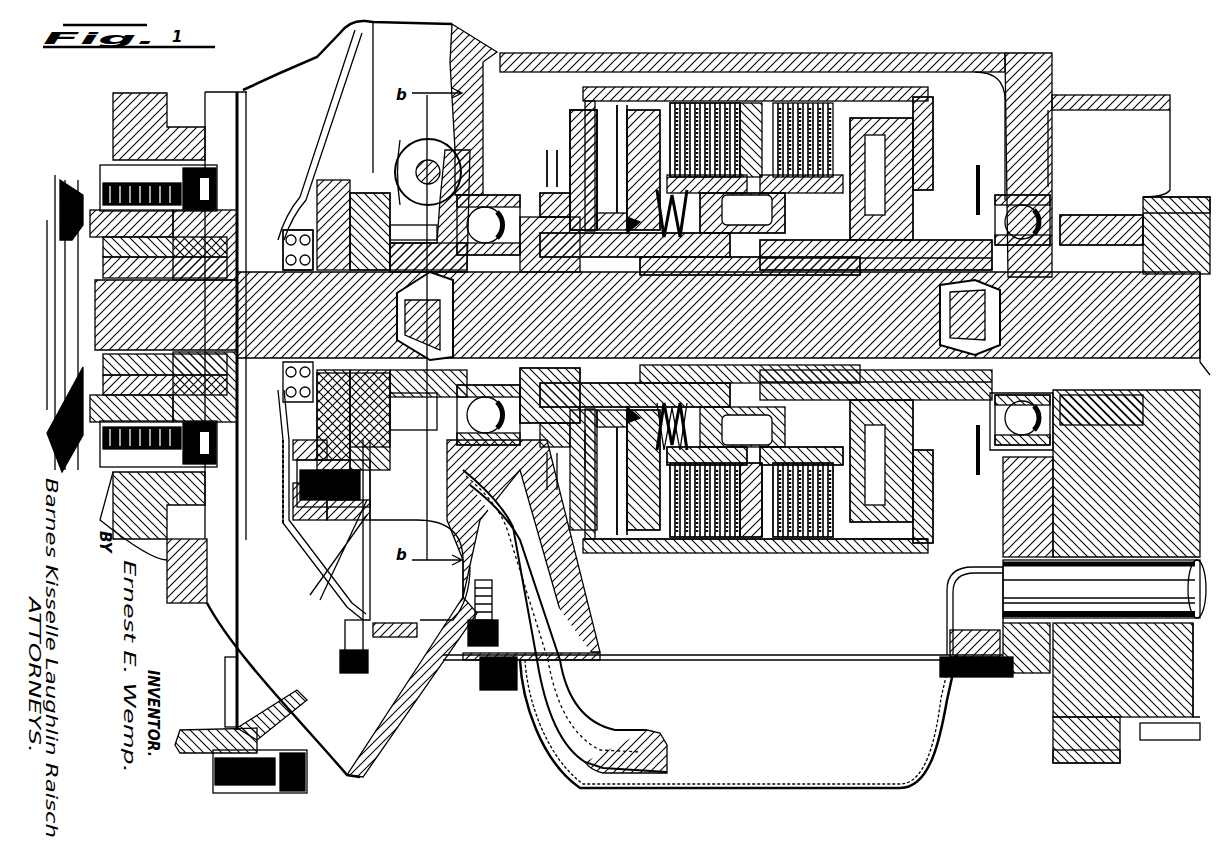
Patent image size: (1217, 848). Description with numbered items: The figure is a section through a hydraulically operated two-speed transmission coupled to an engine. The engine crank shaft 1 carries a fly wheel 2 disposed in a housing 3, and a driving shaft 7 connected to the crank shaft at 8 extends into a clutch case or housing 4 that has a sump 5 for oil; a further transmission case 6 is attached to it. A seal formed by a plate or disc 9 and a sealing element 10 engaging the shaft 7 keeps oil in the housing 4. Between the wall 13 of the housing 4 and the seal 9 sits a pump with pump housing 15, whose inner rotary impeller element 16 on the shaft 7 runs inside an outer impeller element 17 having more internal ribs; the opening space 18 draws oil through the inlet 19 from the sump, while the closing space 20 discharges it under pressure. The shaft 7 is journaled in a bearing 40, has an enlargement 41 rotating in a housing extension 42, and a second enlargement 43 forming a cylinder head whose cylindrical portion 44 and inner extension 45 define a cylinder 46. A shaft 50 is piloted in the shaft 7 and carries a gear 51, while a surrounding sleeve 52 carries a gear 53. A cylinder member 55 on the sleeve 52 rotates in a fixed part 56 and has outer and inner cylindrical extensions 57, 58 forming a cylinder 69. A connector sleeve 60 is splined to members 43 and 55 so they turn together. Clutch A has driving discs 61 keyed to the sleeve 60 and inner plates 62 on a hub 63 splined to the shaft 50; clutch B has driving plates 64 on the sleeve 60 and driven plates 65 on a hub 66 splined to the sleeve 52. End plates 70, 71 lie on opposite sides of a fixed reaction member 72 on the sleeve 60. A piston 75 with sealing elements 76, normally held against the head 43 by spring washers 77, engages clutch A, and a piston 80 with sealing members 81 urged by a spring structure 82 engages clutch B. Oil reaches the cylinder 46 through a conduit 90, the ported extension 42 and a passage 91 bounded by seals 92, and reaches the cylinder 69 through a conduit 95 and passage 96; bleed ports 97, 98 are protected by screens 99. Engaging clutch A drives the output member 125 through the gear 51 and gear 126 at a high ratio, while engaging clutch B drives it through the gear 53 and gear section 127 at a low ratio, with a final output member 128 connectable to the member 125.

The crank shaft 1 is at (62, 208).
The fly wheel 2 is at (150, 120).
The housing 3 is at (280, 705).
The clutch case or housing 4 is at (702, 54).
The sump 5 is at (925, 770).
The transmission housing or case 6 is at (1135, 97).
The driving member or shaft 7 is at (243, 195).
The connection to crank shaft 8 is at (85, 425).
The plate or disc 9 is at (322, 110).
The sealing element 10 is at (276, 400).
The wall 13 is at (505, 56).
The pump housing 15 is at (345, 620).
The rotary impeller element 16 is at (300, 228).
The rotary impeller element 17 is at (365, 190).
The space or passage 18 is at (365, 496).
The inlet 19 is at (595, 627).
The space or chamber 20 is at (413, 232).
The bearing 40 is at (470, 195).
The enlargement 41 is at (635, 380).
The extension of the housing 42 is at (530, 440).
The second enlargement 43 is at (560, 122).
The axially extending cylindrical portion 44 is at (655, 102).
The extension 45 is at (635, 256).
The cylinder 46 is at (635, 555).
The shaft 50 is at (647, 316).
The gear 51 is at (1160, 197).
The sleeve 52 is at (876, 276).
The gear 53 is at (1085, 222).
The cylinder member 55 is at (935, 500).
The fixed part 56 is at (950, 462).
The outer cylindrical extension 57 is at (862, 557).
The inner cylindrical extension 58 is at (876, 282).
The connector member or sleeve 60 is at (760, 86).
The driving plates or discs 61 is at (692, 557).
The inner plates 62 is at (643, 470).
The hub 63 is at (707, 439).
The driving plates 64 is at (752, 557).
The driven plates 65 is at (925, 468).
The hub 66 is at (761, 213).
The cylinder 69 is at (872, 557).
The end plate 70 is at (726, 557).
The end plate 71 is at (772, 550).
The fixed reaction member 72 is at (764, 557).
The piston 75 is at (590, 470).
The sealing elements 76 is at (640, 100).
The spring washers 77 is at (680, 426).
The piston 80 is at (930, 135).
The sealing members 81 is at (800, 557).
The spring structure 82 is at (801, 440).
The conduit 90 is at (560, 172).
The passage 91 is at (717, 268).
The seals 92 is at (540, 180).
The conduit 95 is at (980, 168).
The passage 96 is at (940, 365).
The bleed port 97 is at (590, 100).
The bleed port 98 is at (925, 97).
The screens 99 is at (612, 100).
The output member 125 is at (1065, 690).
The gear 126 is at (1190, 745).
The gear section 127 is at (1060, 752).
The final driven or output member 128 is at (1162, 323).
The multiple disc clutch A is at (705, 90).
The multiple disc clutch B is at (810, 100).